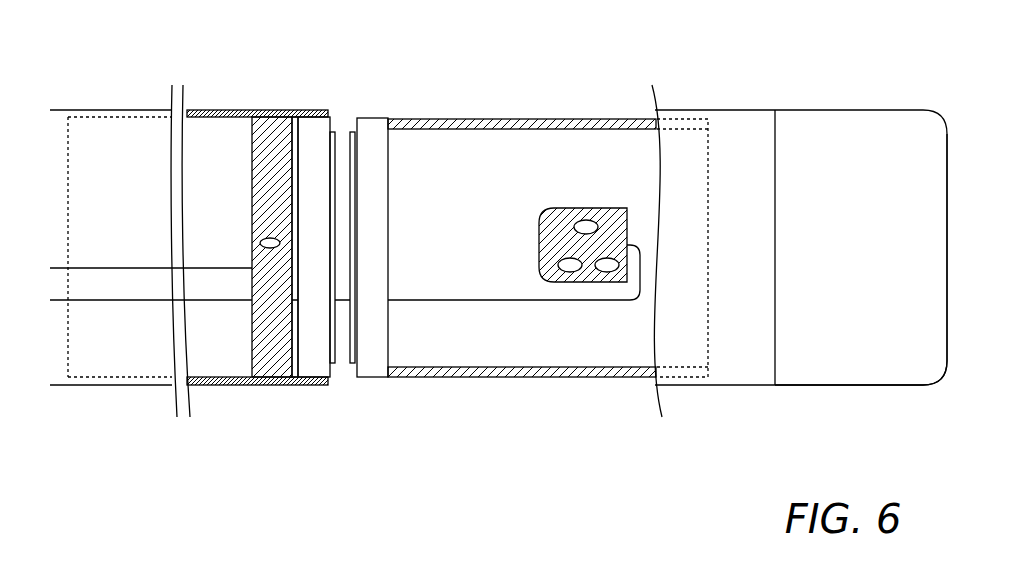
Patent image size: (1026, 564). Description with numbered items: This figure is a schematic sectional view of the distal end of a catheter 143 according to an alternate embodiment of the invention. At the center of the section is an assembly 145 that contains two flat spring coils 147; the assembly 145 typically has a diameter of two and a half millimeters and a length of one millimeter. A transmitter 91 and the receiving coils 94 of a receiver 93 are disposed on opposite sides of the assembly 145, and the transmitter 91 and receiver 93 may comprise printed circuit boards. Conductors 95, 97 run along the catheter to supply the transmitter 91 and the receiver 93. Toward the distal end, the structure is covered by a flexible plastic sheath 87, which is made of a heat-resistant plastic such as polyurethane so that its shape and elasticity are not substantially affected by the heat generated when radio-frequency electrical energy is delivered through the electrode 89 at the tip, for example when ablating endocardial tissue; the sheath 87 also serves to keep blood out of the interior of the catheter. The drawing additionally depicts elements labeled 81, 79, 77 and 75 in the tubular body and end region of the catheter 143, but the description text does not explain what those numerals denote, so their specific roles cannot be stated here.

The catheter 143 is at (158, 53).
The outer tube 81 is at (224, 110).
The transmitter 91 is at (270, 238).
The assembly 145 is at (298, 109).
The flat spring coils 147 is at (333, 365).
The housing tube 79 is at (570, 119).
The flexible plastic sheath 87 is at (718, 110).
The receiver 93 is at (615, 208).
The receiving coils 94 is at (615, 259).
The conductor 95 is at (574, 302).
The conductor 97 is at (120, 267).
The sheath 77 is at (118, 387).
The handle body 75 is at (748, 387).
The electrode 89 is at (843, 387).